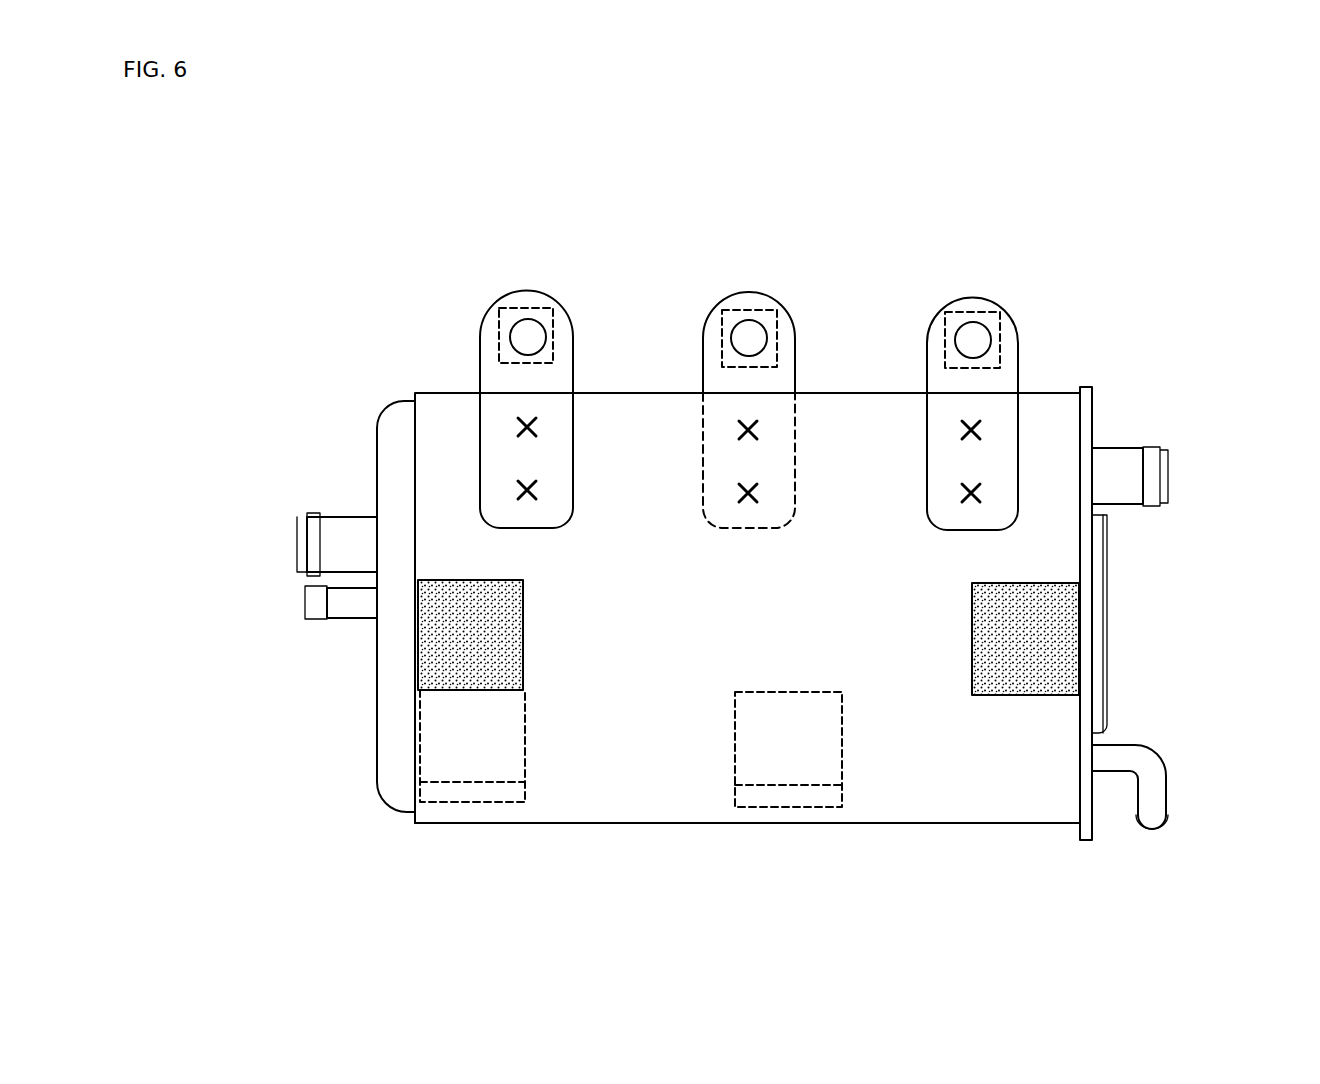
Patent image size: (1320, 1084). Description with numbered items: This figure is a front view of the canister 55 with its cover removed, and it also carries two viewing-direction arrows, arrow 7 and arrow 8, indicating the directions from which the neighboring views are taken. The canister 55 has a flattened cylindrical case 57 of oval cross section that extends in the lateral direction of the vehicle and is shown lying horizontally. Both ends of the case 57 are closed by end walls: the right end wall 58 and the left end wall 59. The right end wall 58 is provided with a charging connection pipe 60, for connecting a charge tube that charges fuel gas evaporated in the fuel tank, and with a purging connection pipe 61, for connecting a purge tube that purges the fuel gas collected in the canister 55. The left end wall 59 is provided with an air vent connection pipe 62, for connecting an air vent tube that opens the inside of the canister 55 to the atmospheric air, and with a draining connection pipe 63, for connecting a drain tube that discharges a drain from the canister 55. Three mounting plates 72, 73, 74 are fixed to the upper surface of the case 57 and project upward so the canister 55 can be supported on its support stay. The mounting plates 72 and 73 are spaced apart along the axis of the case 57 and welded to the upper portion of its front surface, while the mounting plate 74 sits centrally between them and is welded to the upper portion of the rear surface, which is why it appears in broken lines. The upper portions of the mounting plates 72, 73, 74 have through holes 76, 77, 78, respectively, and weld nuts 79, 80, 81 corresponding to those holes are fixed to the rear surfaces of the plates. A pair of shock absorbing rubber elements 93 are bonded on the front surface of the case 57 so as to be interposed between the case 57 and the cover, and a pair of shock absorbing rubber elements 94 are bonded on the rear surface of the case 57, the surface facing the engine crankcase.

The canister 55 is at (653, 823).
The case 57 is at (685, 813).
The right end wall 58 is at (397, 726).
The left end wall 59 is at (1087, 415).
The charging connection pipe 60 is at (333, 620).
The purging connection pipe 61 is at (350, 523).
The air vent connection pipe 62 is at (1157, 472).
The draining connection pipe 63 is at (1158, 788).
The mounting plate 72 is at (1007, 345).
The mounting plate 73 is at (490, 347).
The mounting plate 74 is at (795, 348).
The through hole 76 is at (983, 333).
The through hole 77 is at (532, 327).
The through hole 78 is at (763, 328).
The weld nut 79 is at (972, 310).
The weld nut 80 is at (528, 305).
The weld nut 81 is at (742, 310).
The shock absorbing rubber elements 93 is at (523, 637).
The shock absorbing rubber elements 94 is at (525, 728).
The viewing direction of FIG. 7 is at (1167, 617).
The viewing direction of FIG. 8 is at (754, 248).